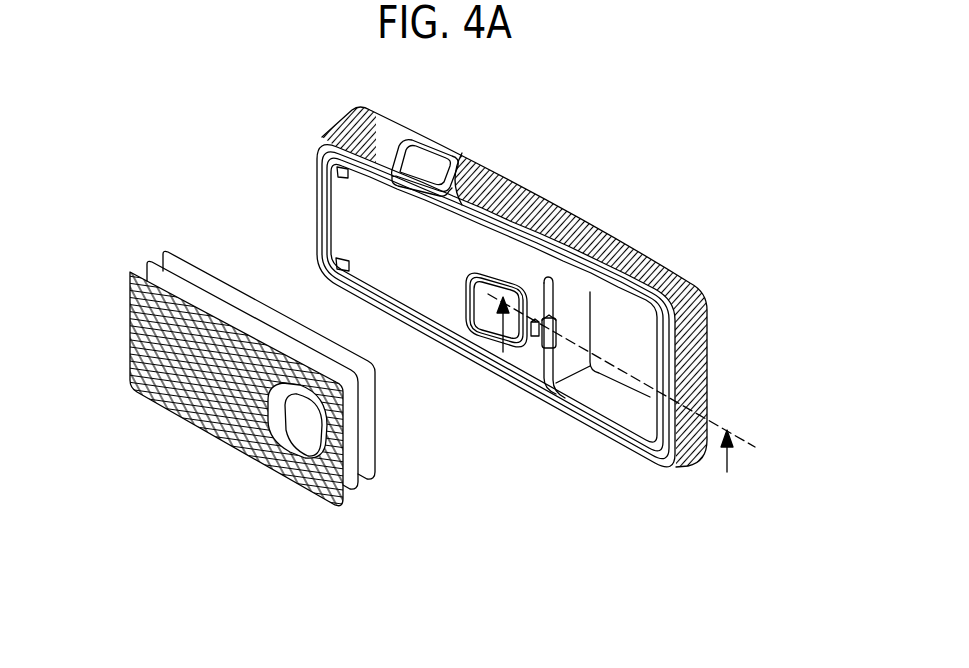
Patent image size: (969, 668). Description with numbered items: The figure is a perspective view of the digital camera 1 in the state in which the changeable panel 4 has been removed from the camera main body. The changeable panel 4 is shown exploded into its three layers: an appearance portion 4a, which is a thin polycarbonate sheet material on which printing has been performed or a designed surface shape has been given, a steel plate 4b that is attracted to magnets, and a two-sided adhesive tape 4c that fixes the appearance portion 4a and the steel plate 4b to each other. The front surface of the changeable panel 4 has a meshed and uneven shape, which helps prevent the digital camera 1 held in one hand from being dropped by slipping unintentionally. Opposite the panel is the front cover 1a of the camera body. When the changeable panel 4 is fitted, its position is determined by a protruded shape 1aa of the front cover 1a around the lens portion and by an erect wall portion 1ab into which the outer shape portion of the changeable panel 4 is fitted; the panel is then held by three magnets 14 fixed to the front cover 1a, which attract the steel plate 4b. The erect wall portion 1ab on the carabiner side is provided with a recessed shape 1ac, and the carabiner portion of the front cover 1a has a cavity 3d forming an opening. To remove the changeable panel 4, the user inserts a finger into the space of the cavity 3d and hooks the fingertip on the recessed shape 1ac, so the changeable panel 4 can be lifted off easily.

The digital camera 1 is at (183, 160).
The front cover 1a is at (638, 308).
The protruded shape 1aa is at (484, 337).
The erect wall portion 1ab is at (326, 130).
The recessed shape 1ac is at (563, 312).
The magnets 14 is at (345, 266).
The cavity 3d is at (627, 360).
The changeable panel 4 is at (457, 443).
The appearance portion 4a is at (343, 503).
The steel plate 4b is at (377, 468).
The two-sided adhesive tape 4c is at (360, 487).